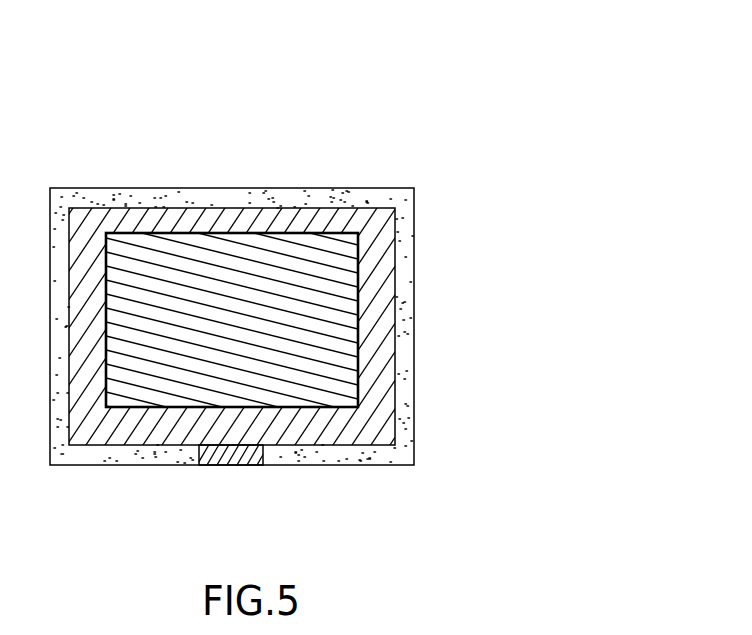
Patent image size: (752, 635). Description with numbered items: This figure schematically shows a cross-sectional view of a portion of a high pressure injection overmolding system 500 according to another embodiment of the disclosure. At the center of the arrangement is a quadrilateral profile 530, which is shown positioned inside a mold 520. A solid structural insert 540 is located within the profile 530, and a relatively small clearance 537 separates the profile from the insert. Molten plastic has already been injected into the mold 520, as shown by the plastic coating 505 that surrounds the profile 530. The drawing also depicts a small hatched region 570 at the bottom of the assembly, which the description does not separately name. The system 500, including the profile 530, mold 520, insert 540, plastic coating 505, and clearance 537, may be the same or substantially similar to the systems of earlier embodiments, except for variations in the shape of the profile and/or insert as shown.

The high pressure injection overmolding system 500 is at (492, 60).
The plastic coating 505 is at (403, 362).
The mold 520 is at (295, 188).
The quadrilateral profile 530 is at (378, 233).
The clearance 537 is at (186, 233).
The solid insert 540 is at (330, 317).
The bottom contact strip 570 is at (237, 465).